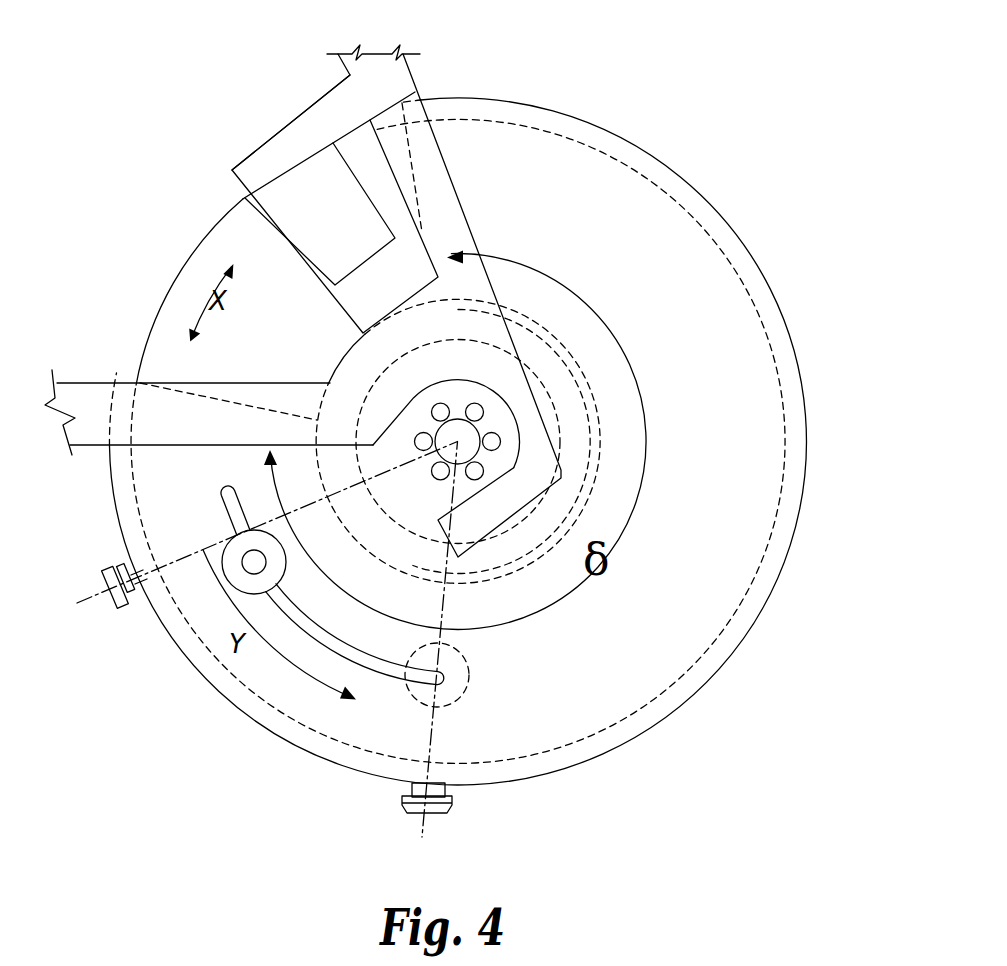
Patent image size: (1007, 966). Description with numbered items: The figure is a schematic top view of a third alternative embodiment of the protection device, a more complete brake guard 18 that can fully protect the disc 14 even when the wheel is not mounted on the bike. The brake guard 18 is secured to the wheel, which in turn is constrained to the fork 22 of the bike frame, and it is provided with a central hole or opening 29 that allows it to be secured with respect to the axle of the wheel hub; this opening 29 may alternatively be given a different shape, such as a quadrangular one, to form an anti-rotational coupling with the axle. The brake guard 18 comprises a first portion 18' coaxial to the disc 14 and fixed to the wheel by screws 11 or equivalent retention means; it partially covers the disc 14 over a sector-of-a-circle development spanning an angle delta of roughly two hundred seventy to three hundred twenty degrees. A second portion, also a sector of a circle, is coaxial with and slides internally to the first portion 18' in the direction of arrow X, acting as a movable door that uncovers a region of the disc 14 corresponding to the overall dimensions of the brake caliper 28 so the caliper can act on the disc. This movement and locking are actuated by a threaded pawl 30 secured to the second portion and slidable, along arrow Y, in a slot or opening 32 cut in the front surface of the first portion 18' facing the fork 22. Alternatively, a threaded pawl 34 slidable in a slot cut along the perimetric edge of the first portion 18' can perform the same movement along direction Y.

The disc 14 is at (377, 175).
The brake caliper 28 is at (276, 158).
The fork 22 is at (430, 163).
The brake guard 18 is at (457, 441).
The first portion 18' is at (477, 441).
The screws 11 is at (494, 443).
The central hole or opening 29 is at (463, 441).
The threaded pawl 30 is at (228, 573).
The slot or opening 32 is at (386, 667).
The threaded pawl 34 is at (108, 577).